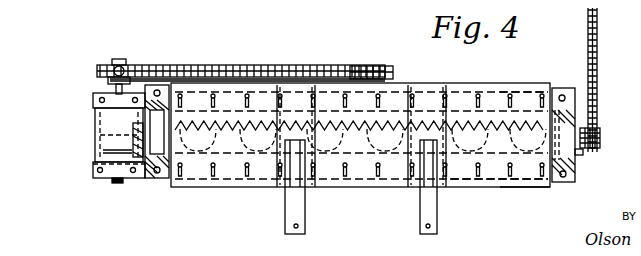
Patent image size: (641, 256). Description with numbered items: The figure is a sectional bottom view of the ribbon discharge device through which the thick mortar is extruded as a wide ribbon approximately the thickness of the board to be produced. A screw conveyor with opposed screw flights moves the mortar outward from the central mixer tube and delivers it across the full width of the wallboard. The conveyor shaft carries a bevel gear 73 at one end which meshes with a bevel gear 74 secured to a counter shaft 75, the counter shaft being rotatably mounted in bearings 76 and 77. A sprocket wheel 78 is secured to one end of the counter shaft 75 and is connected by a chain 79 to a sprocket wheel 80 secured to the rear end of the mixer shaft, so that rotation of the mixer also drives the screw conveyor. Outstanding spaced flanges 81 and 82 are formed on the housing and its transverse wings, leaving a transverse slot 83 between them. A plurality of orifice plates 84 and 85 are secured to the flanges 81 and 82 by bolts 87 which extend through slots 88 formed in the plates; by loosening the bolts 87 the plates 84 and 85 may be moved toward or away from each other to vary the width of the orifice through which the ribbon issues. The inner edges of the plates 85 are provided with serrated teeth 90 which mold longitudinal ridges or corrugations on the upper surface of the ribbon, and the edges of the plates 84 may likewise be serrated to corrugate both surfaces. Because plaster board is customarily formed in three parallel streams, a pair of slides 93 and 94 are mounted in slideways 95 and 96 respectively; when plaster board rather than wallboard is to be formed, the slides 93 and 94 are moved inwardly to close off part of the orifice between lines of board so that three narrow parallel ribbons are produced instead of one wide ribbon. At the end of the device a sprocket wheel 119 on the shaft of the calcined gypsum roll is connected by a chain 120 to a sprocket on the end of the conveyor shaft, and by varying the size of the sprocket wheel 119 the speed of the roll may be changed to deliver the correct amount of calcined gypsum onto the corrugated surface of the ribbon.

The bevel gear 73 is at (98, 140).
The bevel gear 74 is at (93, 165).
The counter shaft 75 is at (112, 94).
The bearing 76 is at (104, 180).
The bearing 77 is at (153, 67).
The sprocket wheel 78 is at (128, 67).
The chain 79 is at (269, 72).
The sprocket wheel 80 is at (382, 67).
The flange 81 is at (526, 180).
The flange 82 is at (524, 92).
The transverse slot 83 is at (540, 92).
The orifice plate 84 is at (491, 183).
The orifice plate 85 is at (400, 92).
The bolt 87 is at (488, 98).
The slot 88 is at (512, 96).
The serrated teeth 90 is at (468, 126).
The slide 93 is at (422, 216).
The slide 94 is at (301, 219).
The slideway 95 is at (413, 182).
The slideway 96 is at (310, 182).
The sprocket wheel 119 is at (600, 131).
The chain 120 is at (598, 62).